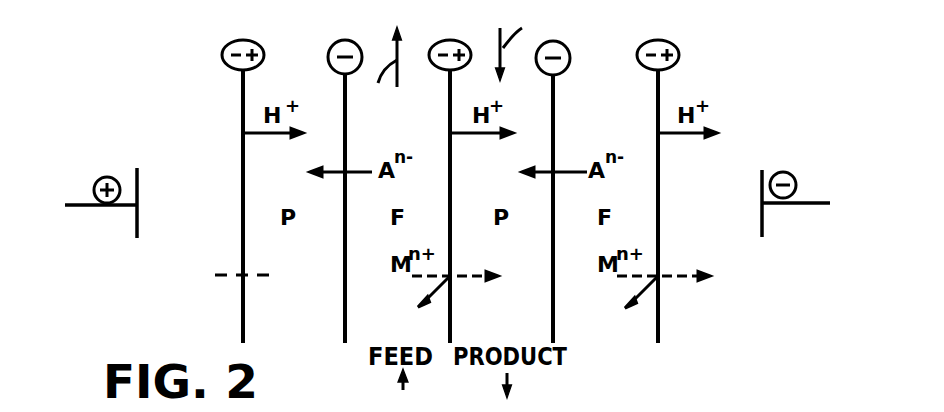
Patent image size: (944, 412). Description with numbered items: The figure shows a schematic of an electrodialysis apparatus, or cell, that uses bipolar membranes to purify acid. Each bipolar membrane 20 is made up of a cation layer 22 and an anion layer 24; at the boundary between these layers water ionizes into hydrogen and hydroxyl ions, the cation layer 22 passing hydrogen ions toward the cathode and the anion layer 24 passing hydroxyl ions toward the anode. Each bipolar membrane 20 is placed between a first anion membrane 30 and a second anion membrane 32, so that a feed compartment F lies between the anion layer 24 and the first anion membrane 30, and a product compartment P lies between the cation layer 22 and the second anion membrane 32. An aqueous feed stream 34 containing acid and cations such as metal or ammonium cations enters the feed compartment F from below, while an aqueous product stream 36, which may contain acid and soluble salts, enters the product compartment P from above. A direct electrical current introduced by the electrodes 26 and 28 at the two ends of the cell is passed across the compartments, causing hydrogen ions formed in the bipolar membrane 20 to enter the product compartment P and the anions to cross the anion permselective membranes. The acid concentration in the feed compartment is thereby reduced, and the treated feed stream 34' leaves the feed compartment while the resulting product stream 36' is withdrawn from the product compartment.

The bipolar membrane 20 is at (243, 100).
The cation layer 22 is at (466, 48).
The anion layer 24 is at (436, 50).
The electrode 26 is at (75, 203).
The electrode 28 is at (808, 200).
The first anion membrane 30 is at (345, 97).
The second anion membrane 32 is at (553, 100).
The aqueous feed stream 34 is at (367, 386).
The treated feed stream 34' is at (383, 70).
The aqueous product stream 36 is at (528, 46).
The resulting product stream 36' is at (545, 388).